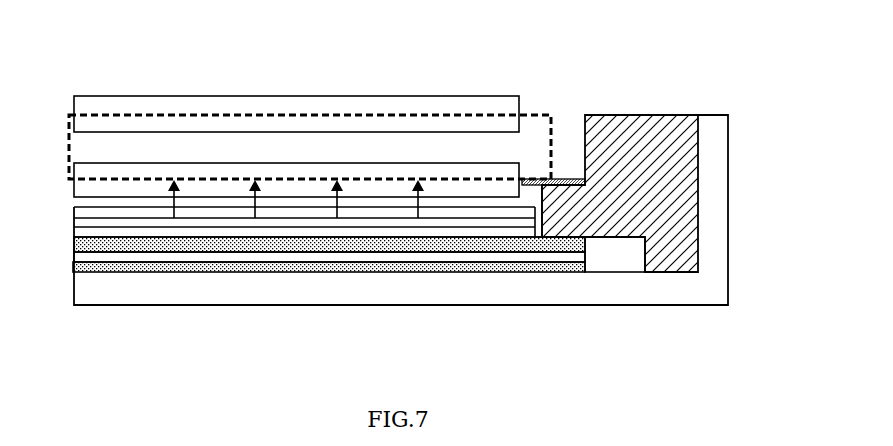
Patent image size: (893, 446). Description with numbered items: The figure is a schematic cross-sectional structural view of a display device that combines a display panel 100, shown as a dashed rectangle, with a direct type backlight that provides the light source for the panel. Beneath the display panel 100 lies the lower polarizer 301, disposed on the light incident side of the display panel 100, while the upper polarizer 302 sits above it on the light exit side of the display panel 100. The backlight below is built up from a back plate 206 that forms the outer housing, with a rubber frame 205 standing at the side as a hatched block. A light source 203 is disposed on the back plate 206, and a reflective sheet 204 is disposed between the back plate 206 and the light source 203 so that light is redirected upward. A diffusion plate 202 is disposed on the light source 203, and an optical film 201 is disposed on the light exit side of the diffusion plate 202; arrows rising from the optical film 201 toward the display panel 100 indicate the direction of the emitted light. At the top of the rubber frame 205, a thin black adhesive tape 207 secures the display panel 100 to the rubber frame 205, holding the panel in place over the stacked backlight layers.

The display panel 100 is at (308, 115).
The lower polarizer 301 is at (356, 186).
The upper polarizer 302 is at (467, 110).
The black adhesive tape 207 is at (567, 180).
The rubber frame 205 is at (682, 123).
The optical film 201 is at (202, 213).
The diffusion plate 202 is at (275, 240).
The light source 203 is at (331, 257).
The reflective sheet 204 is at (385, 267).
The back plate 206 is at (458, 280).